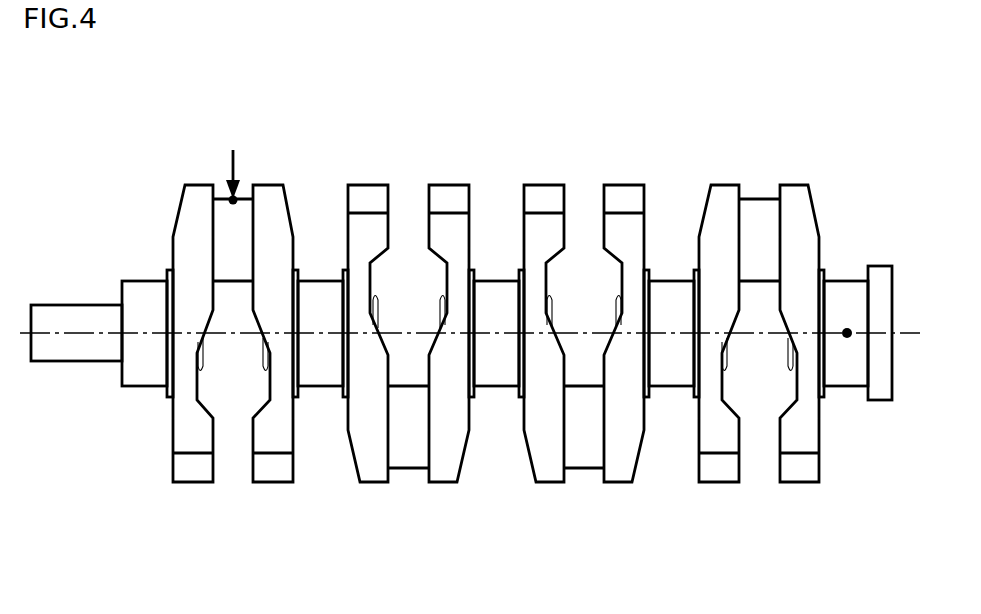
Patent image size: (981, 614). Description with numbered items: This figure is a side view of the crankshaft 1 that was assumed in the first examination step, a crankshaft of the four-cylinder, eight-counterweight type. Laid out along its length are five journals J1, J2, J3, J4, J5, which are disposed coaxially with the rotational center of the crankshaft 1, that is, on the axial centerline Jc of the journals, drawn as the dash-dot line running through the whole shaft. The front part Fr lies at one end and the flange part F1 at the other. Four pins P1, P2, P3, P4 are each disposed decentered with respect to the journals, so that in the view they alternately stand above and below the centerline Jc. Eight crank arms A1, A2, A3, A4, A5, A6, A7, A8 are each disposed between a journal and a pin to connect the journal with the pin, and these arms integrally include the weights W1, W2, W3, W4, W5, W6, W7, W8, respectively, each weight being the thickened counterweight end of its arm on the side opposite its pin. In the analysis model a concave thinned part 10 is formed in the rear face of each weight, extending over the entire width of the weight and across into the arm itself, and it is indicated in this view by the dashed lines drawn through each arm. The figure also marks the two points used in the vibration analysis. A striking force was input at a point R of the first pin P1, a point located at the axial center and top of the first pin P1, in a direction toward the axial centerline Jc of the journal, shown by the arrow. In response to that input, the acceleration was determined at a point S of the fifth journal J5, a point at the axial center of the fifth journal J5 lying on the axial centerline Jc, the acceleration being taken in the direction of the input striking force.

The crankshaft 1 is at (83, 158).
The thinned part 10 is at (203, 338).
The front part Fr is at (67, 303).
The first journal J1 is at (137, 280).
The second journal J2 is at (322, 278).
The third journal J3 is at (497, 278).
The fourth journal J4 is at (663, 278).
The fifth journal J5 is at (845, 280).
The axial centerline of the journal Jc is at (903, 331).
The first weight W1 is at (185, 484).
The second weight W2 is at (275, 484).
The third weight W3 is at (360, 184).
The fourth weight W4 is at (455, 184).
The fifth weight W5 is at (535, 184).
The sixth weight W6 is at (628, 184).
The seventh weight W7 is at (712, 484).
The eighth weight W8 is at (802, 484).
The first crank arm A1 is at (196, 184).
The second crank arm A2 is at (270, 184).
The third crank arm A3 is at (370, 484).
The fourth crank arm A4 is at (448, 484).
The fifth crank arm A5 is at (545, 484).
The sixth crank arm A6 is at (618, 484).
The seventh crank arm A7 is at (720, 184).
The eighth crank arm A8 is at (795, 184).
The first pin P1 is at (247, 198).
The second pin P2 is at (407, 470).
The third pin P3 is at (583, 470).
The fourth pin P4 is at (757, 198).
The point R is at (230, 194).
The point S is at (849, 340).
The flange part F1 is at (884, 265).